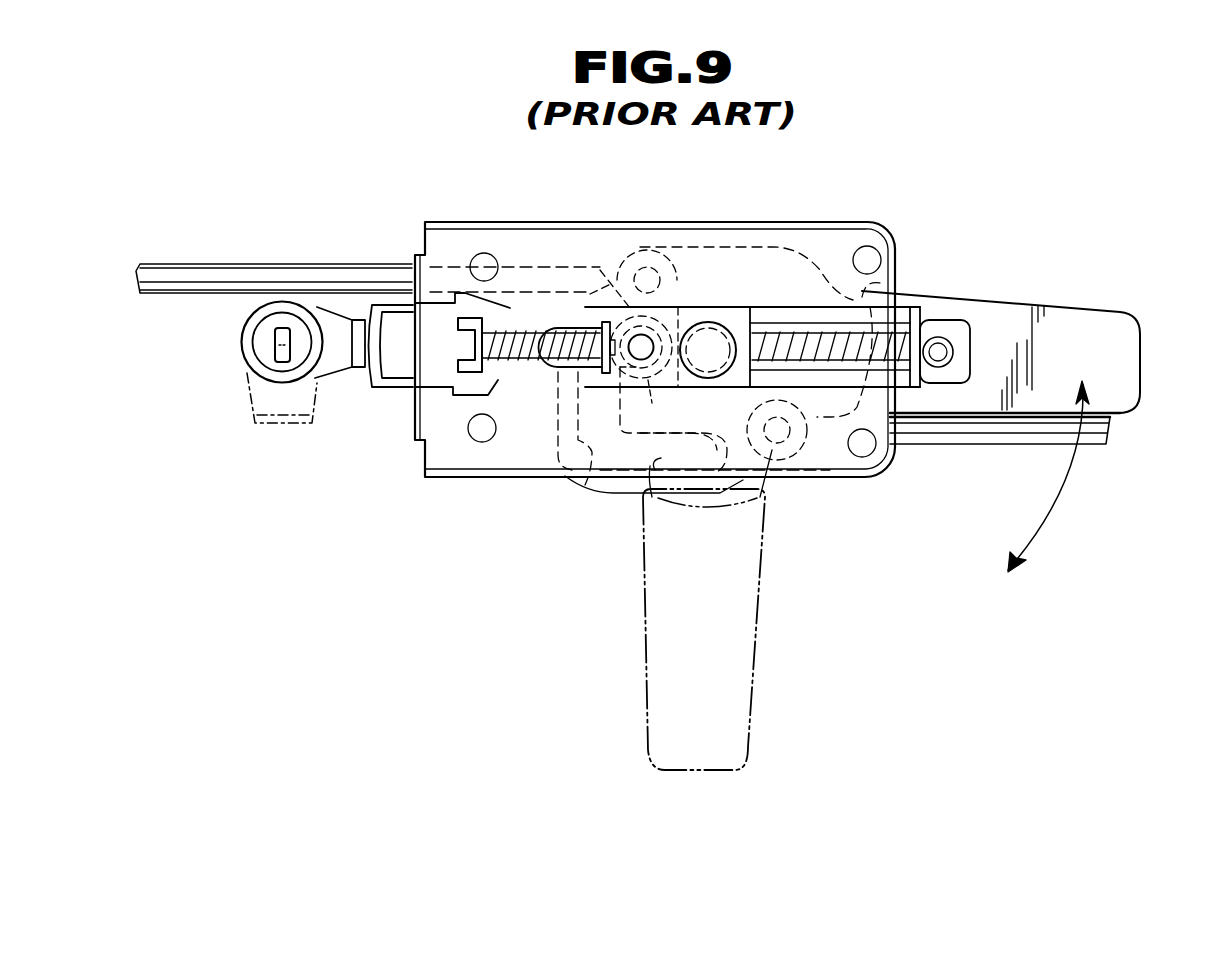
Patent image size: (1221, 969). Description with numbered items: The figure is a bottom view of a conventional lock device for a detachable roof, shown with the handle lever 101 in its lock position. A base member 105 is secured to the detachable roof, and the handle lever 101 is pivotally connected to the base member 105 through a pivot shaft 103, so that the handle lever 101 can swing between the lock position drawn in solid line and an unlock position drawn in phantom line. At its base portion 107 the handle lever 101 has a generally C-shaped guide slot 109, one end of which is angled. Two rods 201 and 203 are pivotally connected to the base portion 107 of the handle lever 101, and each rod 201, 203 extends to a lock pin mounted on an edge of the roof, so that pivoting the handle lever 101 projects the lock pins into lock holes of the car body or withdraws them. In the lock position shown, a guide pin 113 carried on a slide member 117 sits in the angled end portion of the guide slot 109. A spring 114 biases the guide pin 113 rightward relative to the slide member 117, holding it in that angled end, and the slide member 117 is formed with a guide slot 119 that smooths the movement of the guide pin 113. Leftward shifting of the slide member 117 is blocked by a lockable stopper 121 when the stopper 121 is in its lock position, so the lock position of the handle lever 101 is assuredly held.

The handle lever 101 is at (1133, 393).
The pivot shaft 103 is at (717, 328).
The base member 105 is at (818, 243).
The base portion 107 is at (714, 252).
The guide slot 109 is at (587, 453).
The guide pin 113 is at (640, 337).
The spring 114 is at (500, 327).
The slide member 117 is at (500, 376).
The guide slot 119 is at (552, 325).
The lockable stopper 121 is at (295, 427).
The rod 201 is at (953, 436).
The rod 203 is at (310, 274).